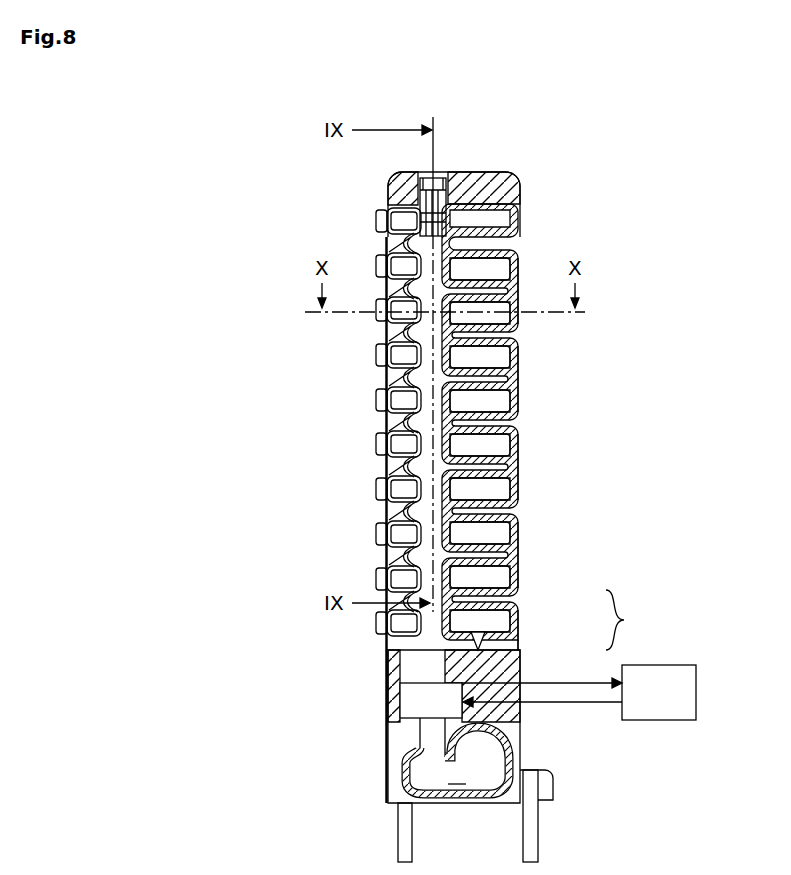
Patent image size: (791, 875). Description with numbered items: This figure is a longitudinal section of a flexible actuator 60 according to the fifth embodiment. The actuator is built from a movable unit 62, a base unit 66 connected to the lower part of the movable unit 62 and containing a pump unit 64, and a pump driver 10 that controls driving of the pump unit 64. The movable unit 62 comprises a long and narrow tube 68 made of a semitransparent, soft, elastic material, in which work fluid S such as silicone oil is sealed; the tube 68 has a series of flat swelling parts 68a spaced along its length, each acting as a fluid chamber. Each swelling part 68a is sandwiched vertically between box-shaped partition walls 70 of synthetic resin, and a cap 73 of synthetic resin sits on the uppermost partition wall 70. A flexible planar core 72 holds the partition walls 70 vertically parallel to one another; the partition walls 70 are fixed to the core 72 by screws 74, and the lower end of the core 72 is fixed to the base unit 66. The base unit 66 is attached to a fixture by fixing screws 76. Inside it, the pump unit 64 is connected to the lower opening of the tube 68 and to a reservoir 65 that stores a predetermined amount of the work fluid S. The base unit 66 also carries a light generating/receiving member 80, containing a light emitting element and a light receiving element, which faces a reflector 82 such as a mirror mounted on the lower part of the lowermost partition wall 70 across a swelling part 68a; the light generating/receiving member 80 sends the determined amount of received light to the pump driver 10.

The pump driver 10 is at (698, 690).
The flexible actuator 60 is at (634, 620).
The movable unit 62 is at (522, 583).
The pump unit 64 is at (412, 690).
The reservoir 65 is at (405, 766).
The base unit 66 is at (522, 655).
The tube 68 is at (427, 385).
The swelling parts 68a is at (520, 423).
The partition walls 70 is at (514, 274).
The core 72 is at (383, 512).
The cap 73 is at (484, 180).
The screws 74 is at (380, 440).
The fixing screws 76 is at (412, 830).
The light generating/receiving member 80 is at (518, 678).
The reflector 82 is at (516, 627).